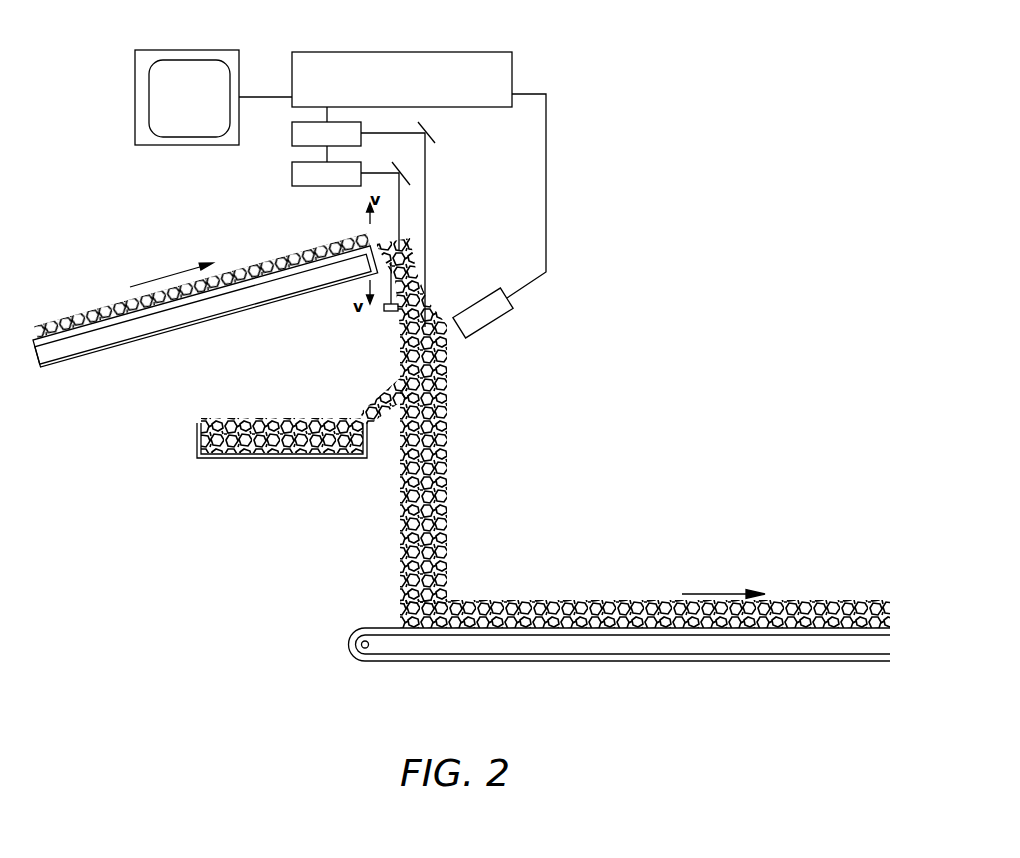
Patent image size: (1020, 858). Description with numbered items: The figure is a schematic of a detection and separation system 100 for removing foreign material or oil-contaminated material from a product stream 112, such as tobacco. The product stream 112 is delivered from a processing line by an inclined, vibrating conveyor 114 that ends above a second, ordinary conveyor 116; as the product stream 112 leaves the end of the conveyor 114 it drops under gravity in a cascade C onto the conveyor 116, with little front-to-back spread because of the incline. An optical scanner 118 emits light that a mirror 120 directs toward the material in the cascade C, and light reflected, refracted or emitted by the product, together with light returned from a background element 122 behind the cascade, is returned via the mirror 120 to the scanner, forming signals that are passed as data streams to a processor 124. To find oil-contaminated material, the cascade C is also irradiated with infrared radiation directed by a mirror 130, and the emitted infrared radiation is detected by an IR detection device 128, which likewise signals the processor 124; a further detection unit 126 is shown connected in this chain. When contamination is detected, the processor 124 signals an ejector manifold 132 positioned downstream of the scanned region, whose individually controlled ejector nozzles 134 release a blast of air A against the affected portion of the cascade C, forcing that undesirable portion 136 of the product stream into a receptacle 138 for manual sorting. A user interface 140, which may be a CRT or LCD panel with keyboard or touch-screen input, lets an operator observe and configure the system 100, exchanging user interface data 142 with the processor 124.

The detection and separation system 100 is at (647, 239).
The product stream 112 is at (310, 249).
The conveyor 114 is at (160, 338).
The conveyor 116 is at (773, 659).
The optical scanner 118 is at (292, 168).
The mirror 120 is at (409, 174).
The background element 122 is at (388, 311).
The processor 124 is at (397, 52).
The sensor connection 126 is at (363, 134).
The IR detection device 128 is at (292, 122).
The mirror 130 is at (424, 121).
The ejector manifold 132 is at (515, 301).
The ejector nozzles 134 is at (450, 330).
The undesirable product material 136 is at (369, 388).
The receptacle 138 is at (198, 430).
The user interface 140 is at (196, 48).
The user interface data 142 is at (263, 95).
The blast of air A is at (448, 337).
The cascade C is at (400, 323).